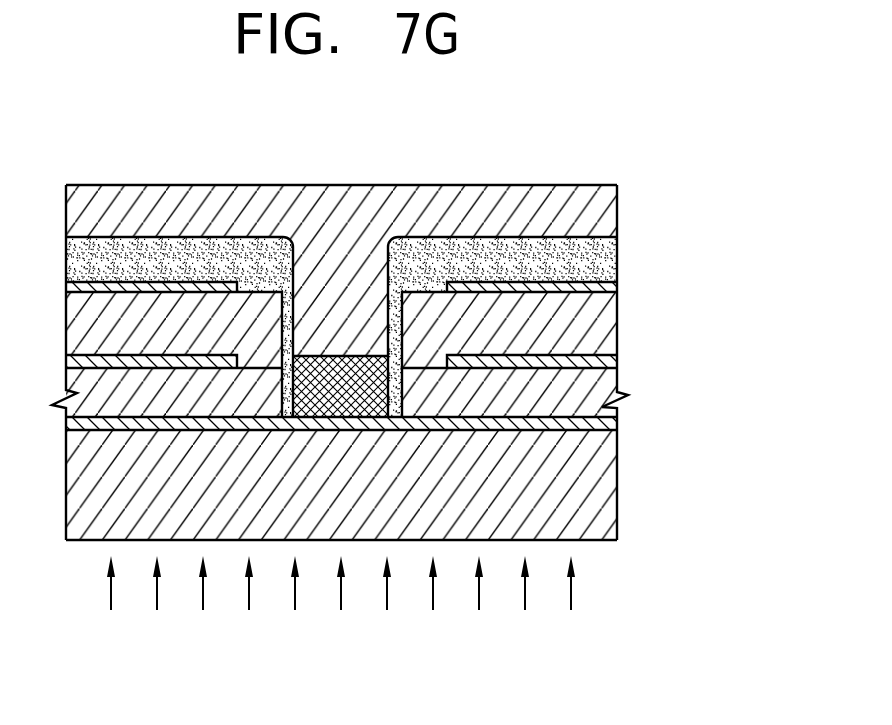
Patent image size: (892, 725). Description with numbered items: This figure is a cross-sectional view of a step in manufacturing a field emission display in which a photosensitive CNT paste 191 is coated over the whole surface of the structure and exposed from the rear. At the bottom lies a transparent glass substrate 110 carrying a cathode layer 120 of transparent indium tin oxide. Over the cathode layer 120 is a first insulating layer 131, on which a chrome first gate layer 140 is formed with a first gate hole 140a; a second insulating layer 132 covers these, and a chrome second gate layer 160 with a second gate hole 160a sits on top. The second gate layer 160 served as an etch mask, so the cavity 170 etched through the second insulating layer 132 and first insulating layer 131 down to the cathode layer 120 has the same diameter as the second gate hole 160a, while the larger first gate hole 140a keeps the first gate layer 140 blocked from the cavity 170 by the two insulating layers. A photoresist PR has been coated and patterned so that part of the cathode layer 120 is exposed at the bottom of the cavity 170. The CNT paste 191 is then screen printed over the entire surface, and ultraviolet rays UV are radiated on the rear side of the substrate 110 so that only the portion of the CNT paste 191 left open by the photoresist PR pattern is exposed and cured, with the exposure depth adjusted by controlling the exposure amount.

The substrate 110 is at (610, 478).
The cathode layer 120 is at (610, 428).
The first insulating layer 131 is at (620, 398).
The second insulating layer 132 is at (617, 333).
The first gate layer 140 is at (610, 362).
The first gate hole 140a is at (450, 363).
The second gate layer 160 is at (610, 287).
The second gate hole 160a is at (446, 289).
The cavity 170 is at (297, 320).
The CNT paste 191 is at (617, 209).
The photoresist PR is at (617, 254).
The ultraviolet rays UV is at (341, 600).